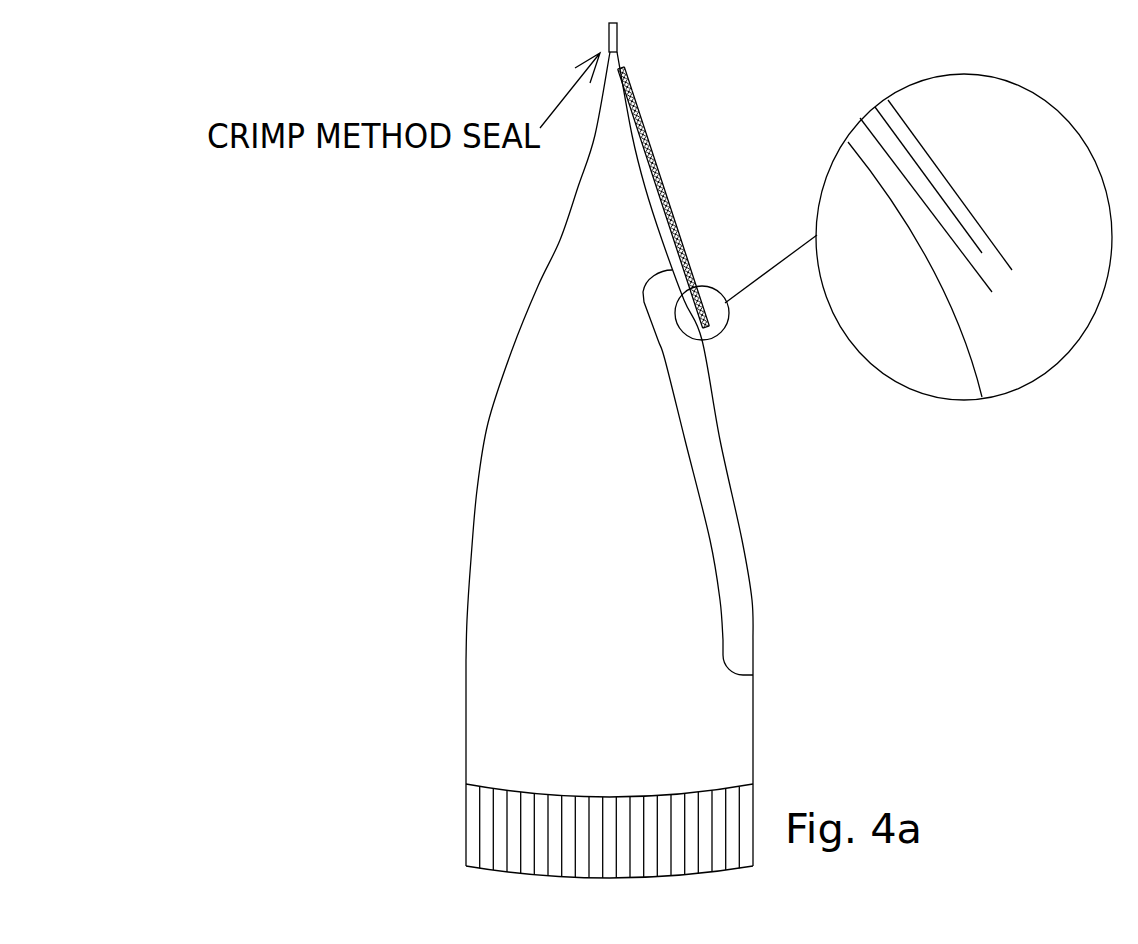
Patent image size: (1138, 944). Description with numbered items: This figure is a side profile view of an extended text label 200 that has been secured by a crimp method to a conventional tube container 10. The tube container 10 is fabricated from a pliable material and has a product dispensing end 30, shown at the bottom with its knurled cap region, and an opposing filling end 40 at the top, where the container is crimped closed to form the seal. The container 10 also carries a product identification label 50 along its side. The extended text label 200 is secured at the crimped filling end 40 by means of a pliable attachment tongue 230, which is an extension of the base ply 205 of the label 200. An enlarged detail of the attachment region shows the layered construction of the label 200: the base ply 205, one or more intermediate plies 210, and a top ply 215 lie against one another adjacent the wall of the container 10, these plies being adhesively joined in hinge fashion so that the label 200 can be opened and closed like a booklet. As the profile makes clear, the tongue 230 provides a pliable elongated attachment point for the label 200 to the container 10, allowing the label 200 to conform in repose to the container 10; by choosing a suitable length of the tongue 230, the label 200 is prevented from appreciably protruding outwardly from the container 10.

The tube container 10 is at (622, 773).
The product dispensing end 30 is at (466, 808).
The filling end 40 is at (608, 46).
The product identification label 50 is at (733, 580).
The extended text label 200 is at (685, 158).
The pliable attachment tongue 230 is at (621, 67).
The base ply 205 is at (900, 160).
The intermediate plies 210 is at (938, 193).
The top ply 215 is at (1000, 245).